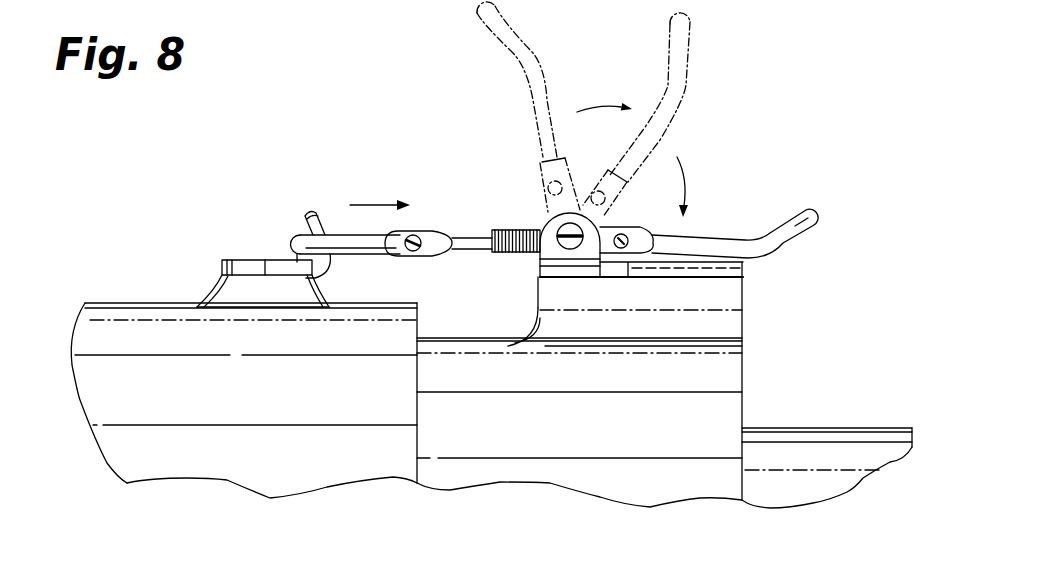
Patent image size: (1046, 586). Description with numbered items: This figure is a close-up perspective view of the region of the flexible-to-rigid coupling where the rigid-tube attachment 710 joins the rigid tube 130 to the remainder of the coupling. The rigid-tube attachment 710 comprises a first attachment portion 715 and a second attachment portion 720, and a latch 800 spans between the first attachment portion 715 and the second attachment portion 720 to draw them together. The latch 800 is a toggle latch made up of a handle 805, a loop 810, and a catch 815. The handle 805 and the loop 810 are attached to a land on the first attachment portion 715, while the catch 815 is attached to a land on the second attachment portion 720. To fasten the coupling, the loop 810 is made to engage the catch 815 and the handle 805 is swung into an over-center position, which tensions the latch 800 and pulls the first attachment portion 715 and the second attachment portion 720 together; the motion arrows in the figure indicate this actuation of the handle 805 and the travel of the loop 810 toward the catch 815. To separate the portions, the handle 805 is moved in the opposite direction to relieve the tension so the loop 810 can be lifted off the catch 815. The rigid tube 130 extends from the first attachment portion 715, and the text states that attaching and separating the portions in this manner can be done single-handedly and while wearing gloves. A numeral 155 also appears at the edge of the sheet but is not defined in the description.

The rigid-tube attachment 710 is at (411, 158).
The loop 810 is at (343, 240).
The catch 815 is at (242, 264).
The latch 800 is at (742, 170).
The handle 805 is at (789, 228).
The second attachment portion 720 is at (259, 409).
The first attachment portion 715 is at (603, 444).
The rigid tube 130 is at (823, 450).
The component 155 is at (884, 9).